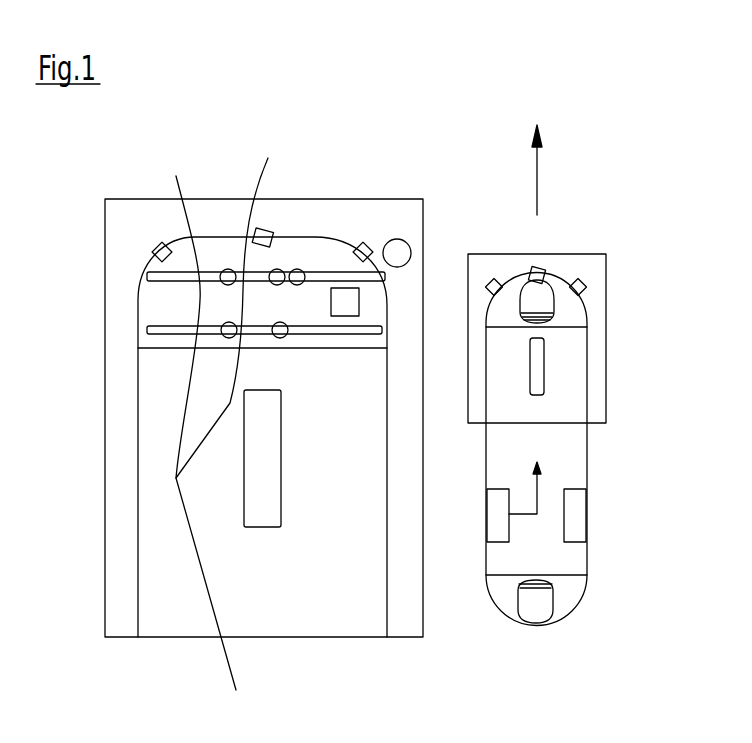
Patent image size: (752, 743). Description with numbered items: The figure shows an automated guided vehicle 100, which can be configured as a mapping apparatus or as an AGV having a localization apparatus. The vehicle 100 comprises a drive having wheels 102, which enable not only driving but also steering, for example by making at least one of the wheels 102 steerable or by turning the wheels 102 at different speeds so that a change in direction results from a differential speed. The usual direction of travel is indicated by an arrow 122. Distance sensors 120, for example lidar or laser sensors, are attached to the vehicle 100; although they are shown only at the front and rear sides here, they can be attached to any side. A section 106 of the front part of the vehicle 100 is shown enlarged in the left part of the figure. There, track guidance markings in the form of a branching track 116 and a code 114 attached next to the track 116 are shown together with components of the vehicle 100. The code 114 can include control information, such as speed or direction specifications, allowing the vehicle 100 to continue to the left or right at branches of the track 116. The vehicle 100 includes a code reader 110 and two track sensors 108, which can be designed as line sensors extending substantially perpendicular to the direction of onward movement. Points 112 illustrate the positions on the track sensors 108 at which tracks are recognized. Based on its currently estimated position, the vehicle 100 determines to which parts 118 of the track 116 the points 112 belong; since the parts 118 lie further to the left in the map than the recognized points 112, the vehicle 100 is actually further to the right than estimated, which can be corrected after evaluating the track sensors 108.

The automated guided vehicle 100 is at (596, 42).
The wheels 102 is at (268, 452).
The section of the front part of the vehicle 106 is at (423, 215).
The track sensor 108 is at (315, 272).
The code reader 110 is at (346, 304).
The points 112 is at (227, 268).
The code 114 is at (393, 239).
The track 116 is at (183, 188).
The parts of the track 118 is at (190, 287).
The distance sensor 120 is at (157, 247).
The arrow 122 is at (538, 170).